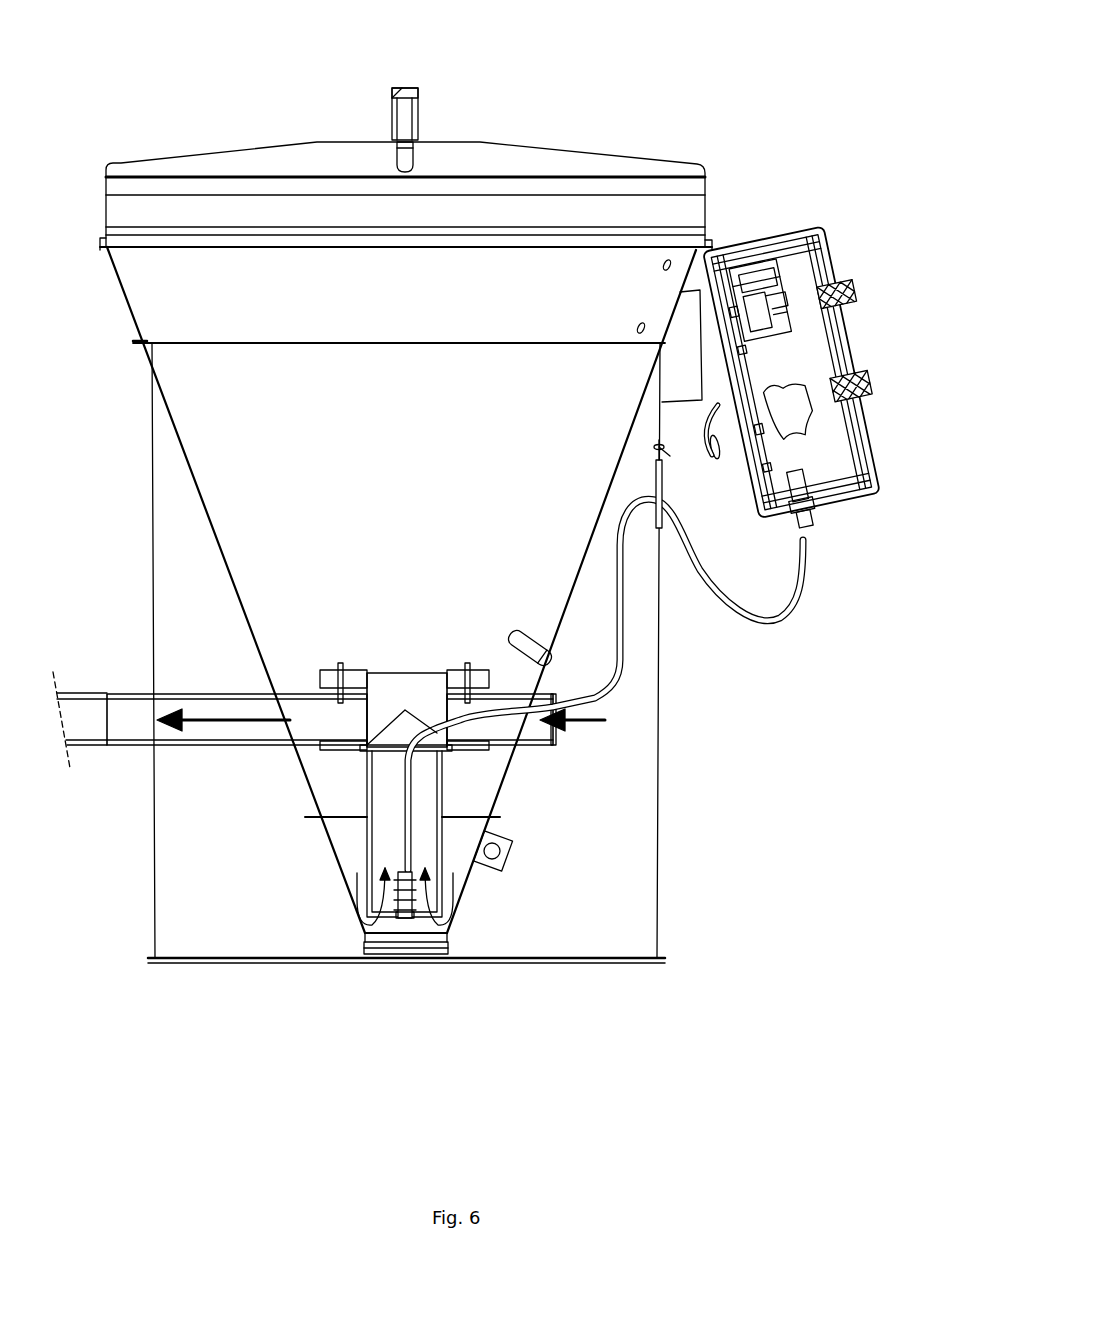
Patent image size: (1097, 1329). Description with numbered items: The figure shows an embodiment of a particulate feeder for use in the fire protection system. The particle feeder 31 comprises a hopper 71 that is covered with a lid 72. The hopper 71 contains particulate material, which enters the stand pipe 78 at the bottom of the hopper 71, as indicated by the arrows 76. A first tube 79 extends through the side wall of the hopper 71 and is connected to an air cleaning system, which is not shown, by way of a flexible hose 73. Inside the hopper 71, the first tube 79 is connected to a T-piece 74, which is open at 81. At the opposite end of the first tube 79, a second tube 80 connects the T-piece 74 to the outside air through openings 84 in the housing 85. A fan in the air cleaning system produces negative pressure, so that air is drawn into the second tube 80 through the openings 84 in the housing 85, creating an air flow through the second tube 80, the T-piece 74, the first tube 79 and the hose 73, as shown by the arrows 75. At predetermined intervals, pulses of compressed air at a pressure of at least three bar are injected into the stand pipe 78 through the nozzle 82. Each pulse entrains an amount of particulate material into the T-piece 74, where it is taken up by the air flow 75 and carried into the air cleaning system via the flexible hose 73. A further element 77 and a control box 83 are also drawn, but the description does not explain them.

The particle feeder 31 is at (684, 82).
The hopper 71 is at (262, 497).
The lid 72 is at (470, 157).
The flexible hose 73 is at (92, 746).
The T-piece 74 is at (393, 672).
The arrows (air flow) 75 is at (240, 716).
The arrows (particulate material flow) 76 is at (450, 898).
The sensor 77 is at (513, 845).
The stand pipe 78 is at (445, 804).
The first tube 79 is at (226, 746).
The second tube 80 is at (525, 748).
The opening of T-piece 81 is at (365, 800).
The nozzle 82 is at (397, 906).
The control box 83 is at (745, 240).
The openings 84 is at (665, 527).
The housing 85 is at (659, 718).